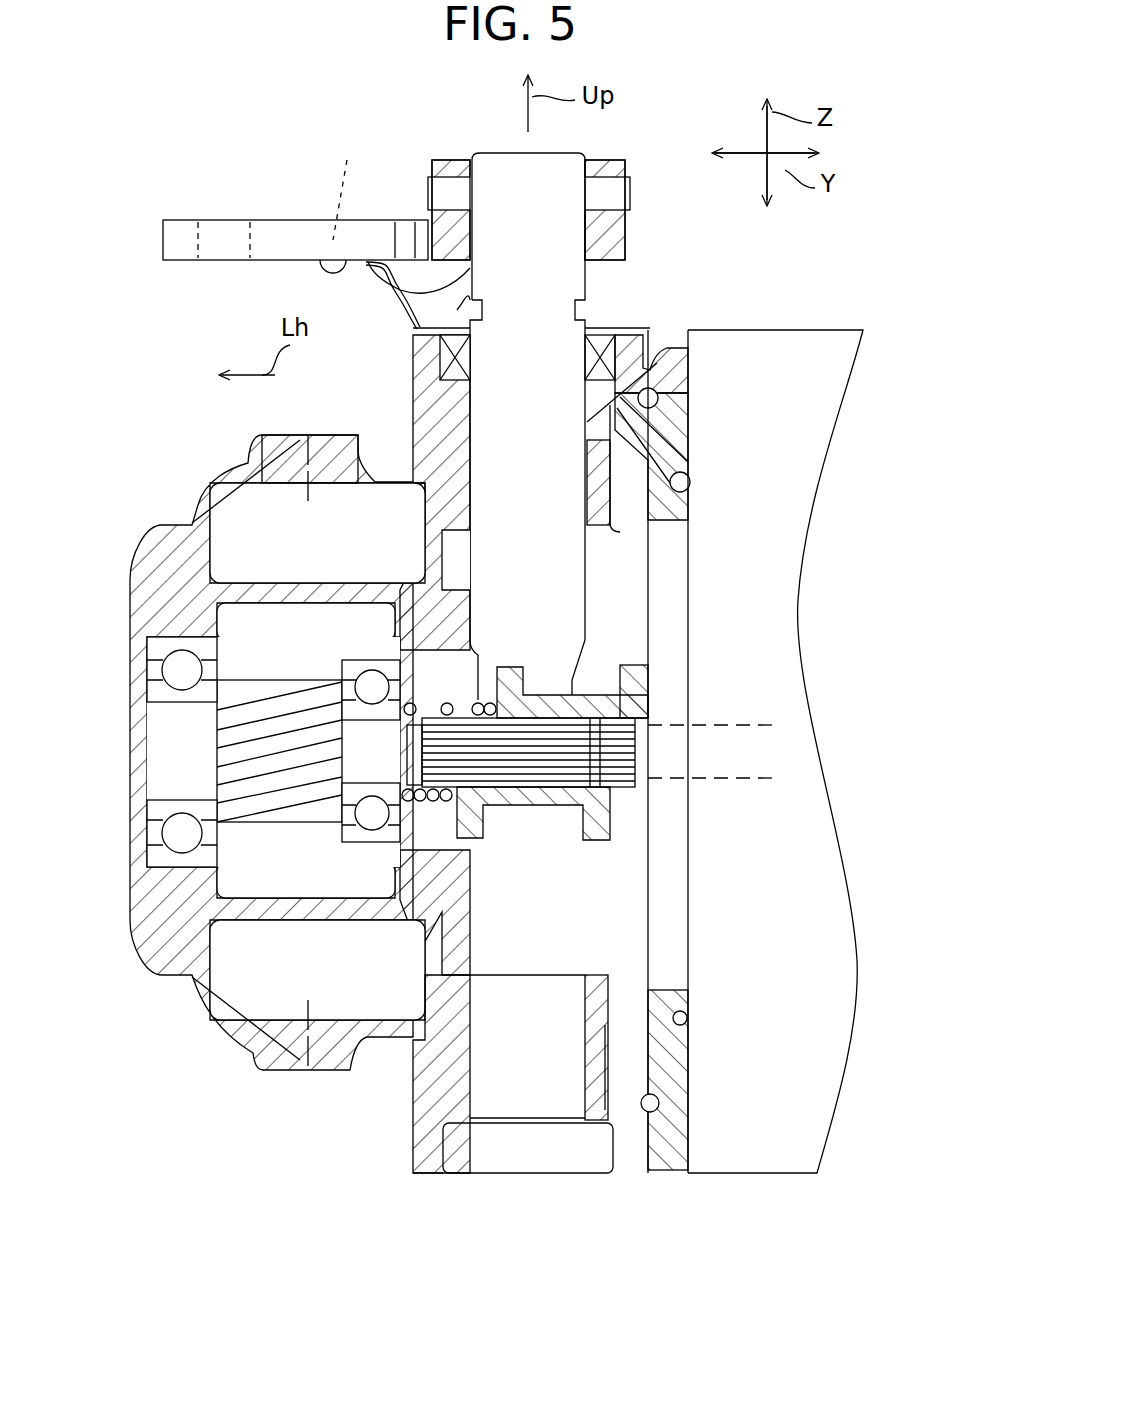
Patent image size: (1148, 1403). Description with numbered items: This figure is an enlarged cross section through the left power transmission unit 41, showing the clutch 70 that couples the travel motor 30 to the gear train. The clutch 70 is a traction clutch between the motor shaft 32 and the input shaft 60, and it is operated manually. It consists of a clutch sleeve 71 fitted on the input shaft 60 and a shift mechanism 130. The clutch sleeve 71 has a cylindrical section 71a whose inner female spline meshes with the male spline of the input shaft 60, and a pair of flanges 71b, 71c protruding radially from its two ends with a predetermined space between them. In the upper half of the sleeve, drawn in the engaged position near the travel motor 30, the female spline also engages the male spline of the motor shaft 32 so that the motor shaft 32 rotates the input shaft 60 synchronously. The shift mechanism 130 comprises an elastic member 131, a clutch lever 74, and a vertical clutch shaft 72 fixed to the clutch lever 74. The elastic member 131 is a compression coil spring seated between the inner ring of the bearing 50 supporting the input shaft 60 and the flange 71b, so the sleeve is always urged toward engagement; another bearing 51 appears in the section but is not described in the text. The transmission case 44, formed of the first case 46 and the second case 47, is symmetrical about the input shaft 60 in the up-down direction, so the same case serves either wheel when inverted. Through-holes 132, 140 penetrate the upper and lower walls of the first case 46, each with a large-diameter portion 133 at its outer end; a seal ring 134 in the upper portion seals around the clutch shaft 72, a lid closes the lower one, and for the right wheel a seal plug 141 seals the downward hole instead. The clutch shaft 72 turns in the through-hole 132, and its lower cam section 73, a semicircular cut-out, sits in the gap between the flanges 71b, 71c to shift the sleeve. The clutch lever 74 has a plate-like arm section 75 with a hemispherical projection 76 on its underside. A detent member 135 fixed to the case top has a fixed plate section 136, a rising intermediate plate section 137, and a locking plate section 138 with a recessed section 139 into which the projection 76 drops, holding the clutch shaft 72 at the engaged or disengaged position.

The travel motor 30 is at (790, 350).
The motor shaft 32 is at (625, 755).
The power transmission unit 41 is at (752, 305).
The transmission case 44 is at (423, 1092).
The first case 46 is at (443, 1137).
The second case 47 is at (272, 1045).
The bearing 50 is at (372, 687).
The bearing 51 is at (182, 670).
The input shaft 60 is at (528, 770).
The clutch 70 is at (606, 658).
The clutch sleeve 71 is at (628, 665).
The cylindrical section 71a is at (592, 700).
The flange 71b is at (490, 790).
The flange 71c is at (640, 680).
The clutch shaft 72 is at (535, 292).
The cam section 73 is at (560, 600).
The clutch lever 74 is at (298, 220).
The arm section 75 is at (368, 220).
The projection 76 is at (350, 182).
The shift mechanism 130 is at (590, 424).
The elastic member 131 is at (470, 710).
The through-hole 132 is at (475, 400).
The large-diameter portion 133 is at (412, 322).
The seal ring 134 is at (592, 330).
The detent member 135 is at (413, 258).
The fixed plate section 136 is at (534, 345).
The intermediate plate section 137 is at (470, 300).
The locking plate section 138 is at (366, 262).
The recessed section 139 is at (330, 272).
The through-hole 140 is at (472, 1067).
The seal plug 141 is at (578, 1153).